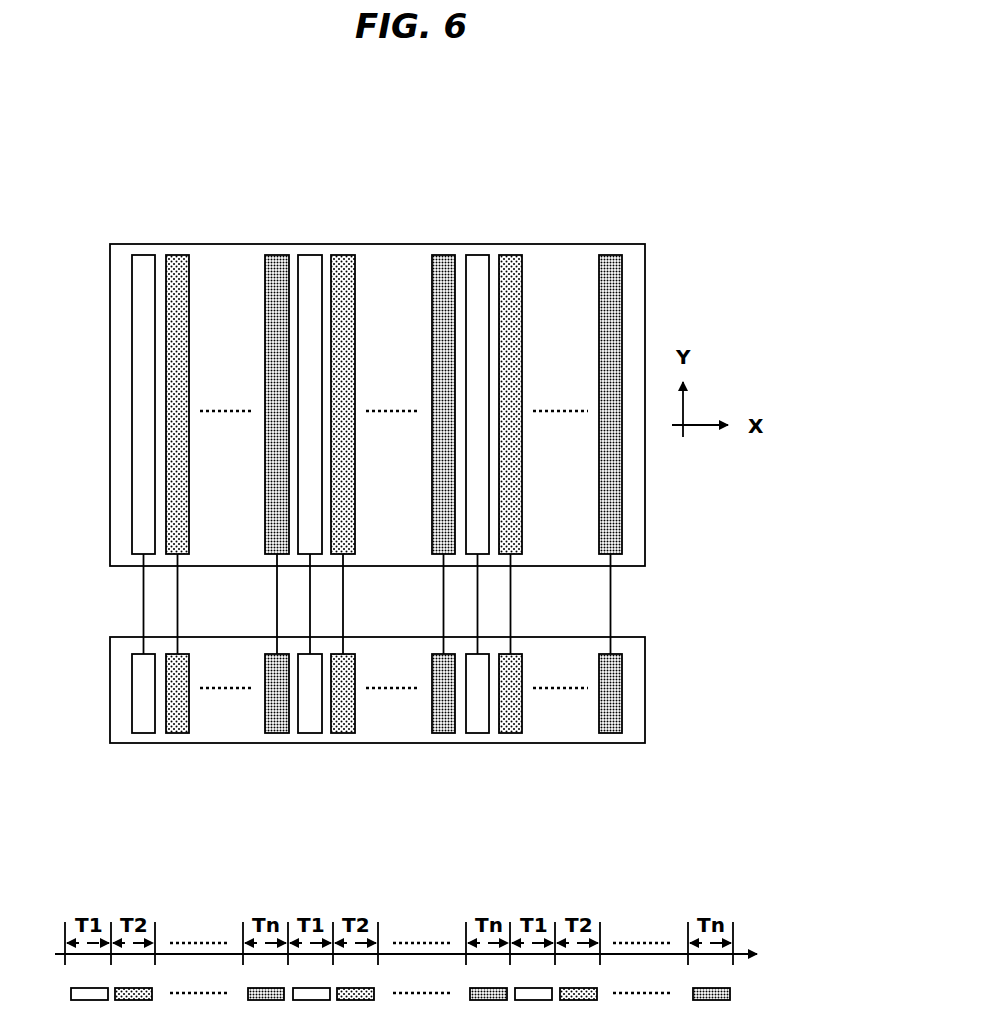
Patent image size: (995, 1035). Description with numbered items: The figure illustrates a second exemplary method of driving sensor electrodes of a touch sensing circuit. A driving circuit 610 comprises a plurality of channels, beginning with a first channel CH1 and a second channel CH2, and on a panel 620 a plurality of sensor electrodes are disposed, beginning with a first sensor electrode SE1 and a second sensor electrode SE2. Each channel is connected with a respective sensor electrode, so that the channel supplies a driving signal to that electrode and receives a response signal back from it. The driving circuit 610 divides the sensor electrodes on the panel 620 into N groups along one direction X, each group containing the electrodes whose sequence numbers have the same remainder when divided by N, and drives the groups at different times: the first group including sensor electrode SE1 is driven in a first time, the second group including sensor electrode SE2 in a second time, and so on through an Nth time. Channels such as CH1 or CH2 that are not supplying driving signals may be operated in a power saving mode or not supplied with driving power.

The driving circuit 610 is at (422, 747).
The panel 620 is at (422, 347).
The sensor electrode SE1 is at (143, 255).
The sensor electrode SE2 is at (177, 255).
The channel CH1 is at (143, 743).
The channel CH2 is at (177, 743).